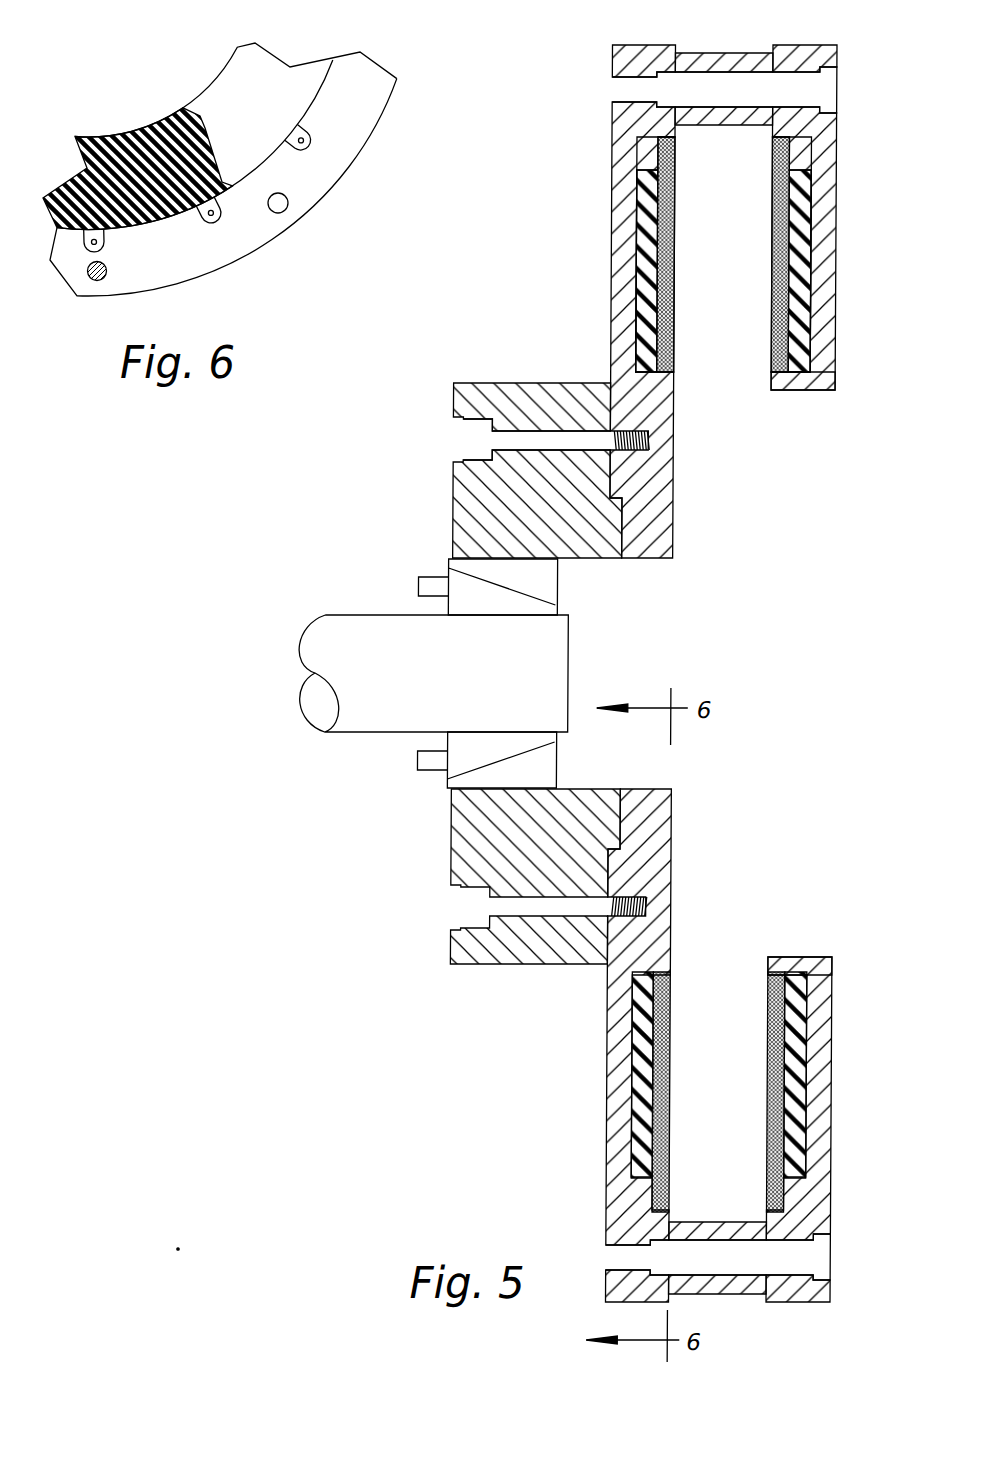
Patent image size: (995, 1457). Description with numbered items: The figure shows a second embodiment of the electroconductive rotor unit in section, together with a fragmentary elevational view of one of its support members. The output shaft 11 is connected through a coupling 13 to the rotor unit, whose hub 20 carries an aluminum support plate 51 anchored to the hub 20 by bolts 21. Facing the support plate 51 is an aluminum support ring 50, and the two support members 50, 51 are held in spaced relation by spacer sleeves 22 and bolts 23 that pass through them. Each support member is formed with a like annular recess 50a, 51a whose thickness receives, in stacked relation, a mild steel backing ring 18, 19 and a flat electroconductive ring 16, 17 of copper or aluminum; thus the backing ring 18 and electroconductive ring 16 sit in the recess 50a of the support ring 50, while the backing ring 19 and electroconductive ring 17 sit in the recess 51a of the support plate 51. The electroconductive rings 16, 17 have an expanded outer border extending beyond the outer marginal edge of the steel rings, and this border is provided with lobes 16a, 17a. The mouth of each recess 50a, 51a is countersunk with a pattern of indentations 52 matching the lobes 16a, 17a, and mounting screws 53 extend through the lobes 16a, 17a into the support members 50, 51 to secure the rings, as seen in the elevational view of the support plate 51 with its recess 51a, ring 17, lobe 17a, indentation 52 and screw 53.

In FIG. 5, the output shaft 11 is at (382, 620).
In FIG. 5, the coupling 13 is at (453, 758).
In FIG. 5, the hub 20 is at (506, 397).
In FIG. 5, the bolts 21 is at (462, 440).
In FIG. 5, the spacer sleeves 22 is at (708, 55).
In FIG. 6, the bolts 23 is at (95, 280).
In FIG. 5, the bolts 23 is at (822, 90).
In FIG. 5, the aluminum support ring 50 is at (820, 140).
In FIG. 5, the annular recess 50a is at (808, 353).
In FIG. 6, the support plate 51 is at (322, 183).
In FIG. 5, the support plate 51 is at (620, 130).
In FIG. 6, the annular recess 51a is at (320, 102).
In FIG. 5, the annular recess 51a is at (640, 318).
In FIG. 5, the electroconductive ring 16 is at (773, 337).
In FIG. 5, the lobes 16a is at (772, 157).
In FIG. 6, the electroconductive ring 17 is at (220, 82).
In FIG. 5, the electroconductive ring 17 is at (668, 277).
In FIG. 6, the lobes 17a is at (292, 140).
In FIG. 5, the lobes 17a is at (670, 160).
In FIG. 5, the mild steel backing ring 18 is at (796, 235).
In FIG. 6, the mild steel backing ring 19 is at (152, 205).
In FIG. 5, the mild steel backing ring 19 is at (638, 248).
In FIG. 6, the indentations 52 is at (218, 220).
In FIG. 6, the mounting screws 53 is at (308, 142).